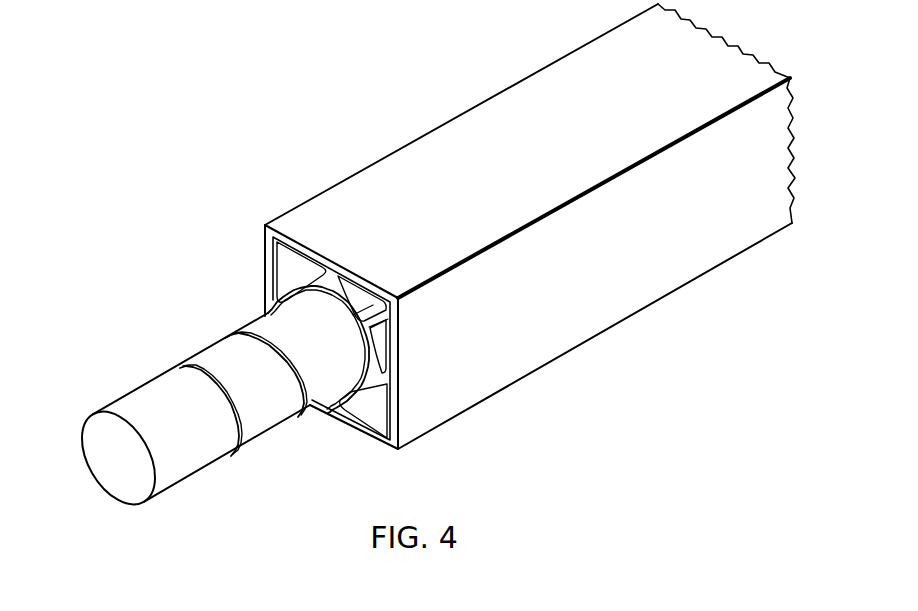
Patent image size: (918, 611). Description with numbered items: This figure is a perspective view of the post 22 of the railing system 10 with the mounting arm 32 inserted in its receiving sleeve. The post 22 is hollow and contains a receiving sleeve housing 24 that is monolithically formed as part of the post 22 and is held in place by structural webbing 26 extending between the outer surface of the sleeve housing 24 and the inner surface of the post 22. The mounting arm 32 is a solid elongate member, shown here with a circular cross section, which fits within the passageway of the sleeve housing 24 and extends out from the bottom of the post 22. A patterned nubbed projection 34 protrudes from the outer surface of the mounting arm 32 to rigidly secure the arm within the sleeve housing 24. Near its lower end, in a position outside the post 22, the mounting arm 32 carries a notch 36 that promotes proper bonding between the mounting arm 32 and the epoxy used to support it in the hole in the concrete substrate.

The railing system 10 is at (412, 83).
The post 22 is at (603, 327).
The receiving sleeve housing 24 is at (355, 388).
The structural webbing 26 is at (402, 370).
The mounting arm 32 is at (136, 376).
The nubbed patterned projection 34 is at (225, 338).
The notch 36 is at (228, 453).